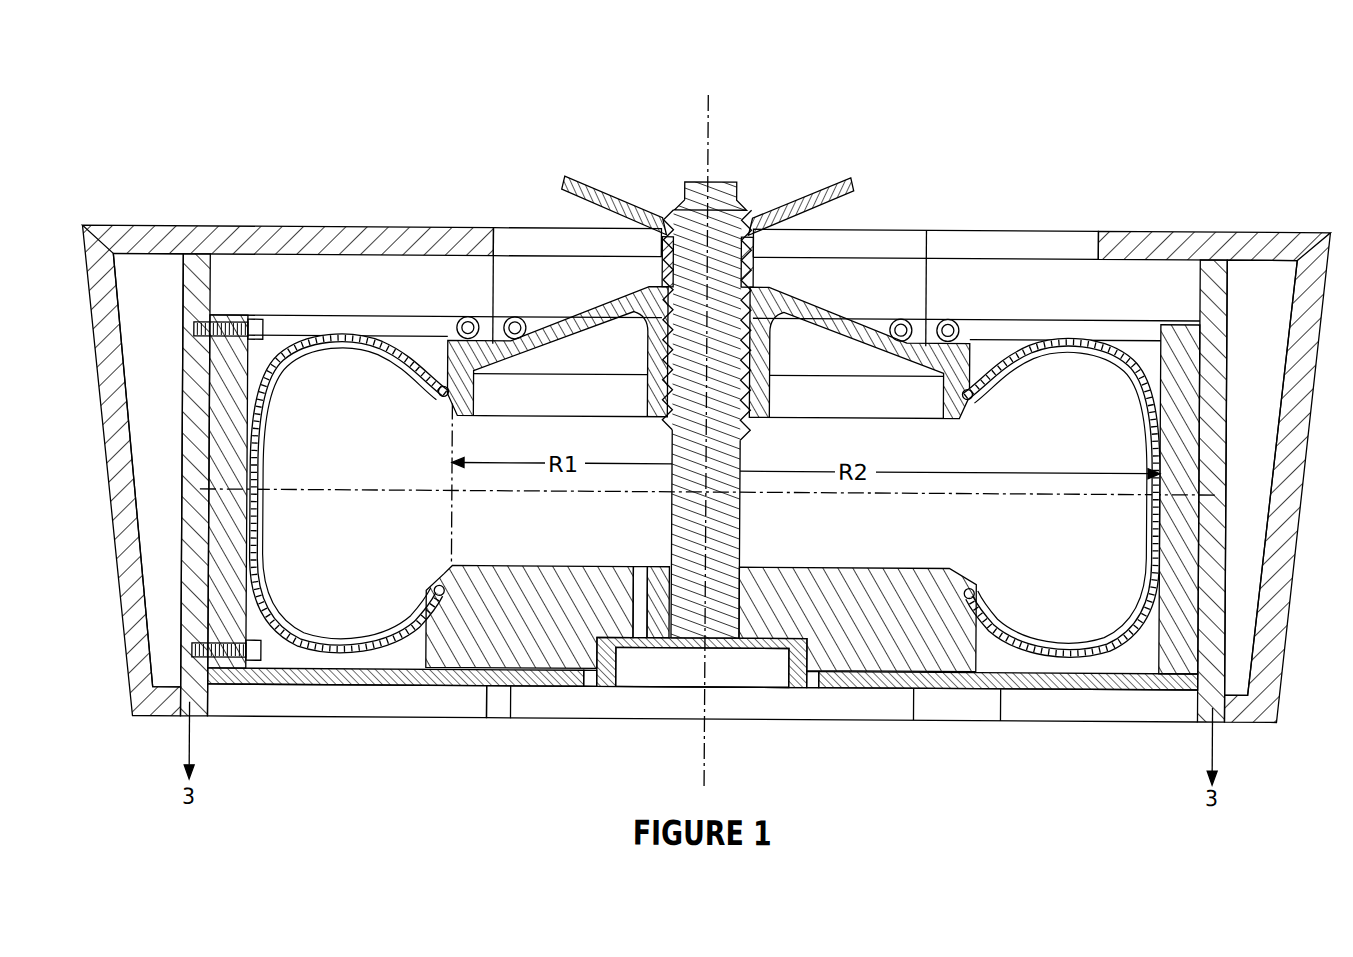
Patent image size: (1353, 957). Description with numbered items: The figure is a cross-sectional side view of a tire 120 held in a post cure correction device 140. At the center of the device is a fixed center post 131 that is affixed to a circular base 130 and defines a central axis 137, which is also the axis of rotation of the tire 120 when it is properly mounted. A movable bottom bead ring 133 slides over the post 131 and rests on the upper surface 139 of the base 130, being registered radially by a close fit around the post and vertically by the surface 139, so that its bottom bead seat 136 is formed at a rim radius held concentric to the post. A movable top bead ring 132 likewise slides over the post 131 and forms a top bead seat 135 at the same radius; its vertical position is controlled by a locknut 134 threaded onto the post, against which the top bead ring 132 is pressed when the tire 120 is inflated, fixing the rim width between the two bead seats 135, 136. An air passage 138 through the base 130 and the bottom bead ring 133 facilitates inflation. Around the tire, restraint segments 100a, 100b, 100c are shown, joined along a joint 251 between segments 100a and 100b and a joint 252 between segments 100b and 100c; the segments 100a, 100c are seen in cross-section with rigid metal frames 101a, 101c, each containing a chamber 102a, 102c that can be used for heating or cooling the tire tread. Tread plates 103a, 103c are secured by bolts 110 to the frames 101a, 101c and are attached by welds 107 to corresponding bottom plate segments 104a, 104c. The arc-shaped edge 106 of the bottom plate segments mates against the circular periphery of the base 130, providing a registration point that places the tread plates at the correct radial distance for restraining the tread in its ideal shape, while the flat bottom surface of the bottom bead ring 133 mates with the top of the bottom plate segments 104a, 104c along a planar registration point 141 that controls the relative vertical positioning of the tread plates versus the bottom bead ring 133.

The restraint segment 100a is at (268, 228).
The restraint segment 100b is at (540, 222).
The restraint segment 100c is at (1129, 228).
The frame 101a is at (147, 240).
The frame 101c is at (1276, 250).
The chamber 102a is at (162, 412).
The chamber 102c is at (1252, 476).
The tread plate 103a is at (222, 472).
The tread plate 103c is at (1192, 380).
The bottom plate segment 104a is at (352, 702).
The bottom plate segment 104c is at (1002, 702).
The arc-shaped edge 106 is at (590, 690).
The weld 107 is at (263, 682).
The bolt 110 is at (266, 332).
The tire 120 is at (375, 378).
The base 130 is at (622, 662).
The center post 131 is at (718, 182).
The top bead ring 132 is at (808, 300).
The bottom bead ring 133 is at (765, 595).
The locknut 134 is at (826, 176).
The top bead seat 135 is at (449, 390).
The bottom bead seat 136 is at (472, 690).
The central axis 137 is at (704, 98).
The air passage 138 is at (645, 566).
The upper surface 139 is at (762, 662).
The post cure correction device 140 is at (527, 112).
The registration point 141 is at (511, 692).
The joint 251 is at (490, 240).
The joint 252 is at (926, 238).